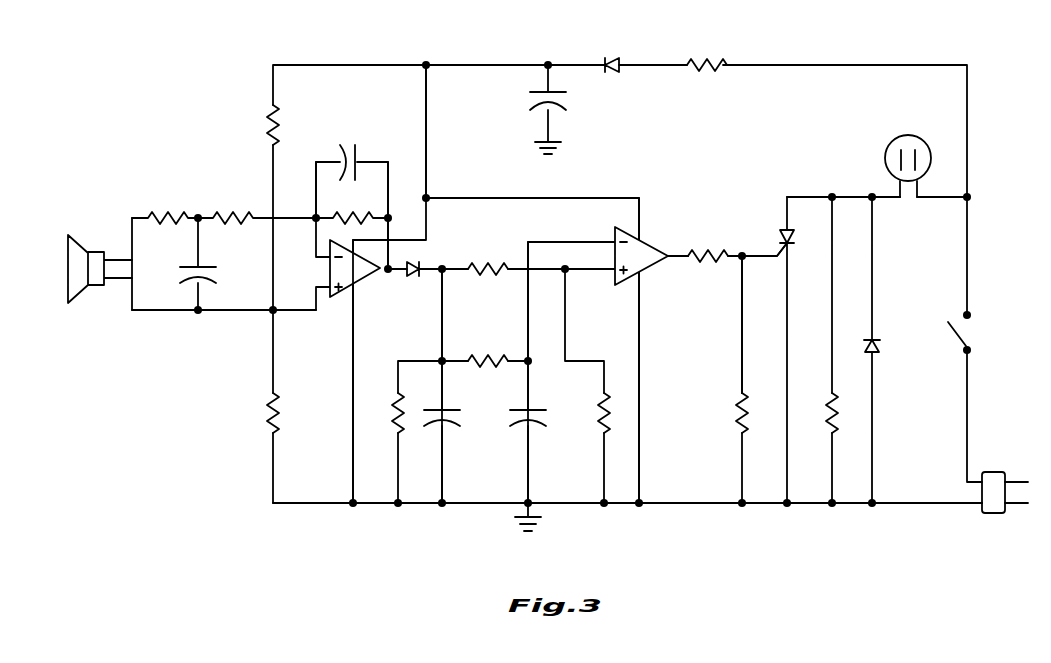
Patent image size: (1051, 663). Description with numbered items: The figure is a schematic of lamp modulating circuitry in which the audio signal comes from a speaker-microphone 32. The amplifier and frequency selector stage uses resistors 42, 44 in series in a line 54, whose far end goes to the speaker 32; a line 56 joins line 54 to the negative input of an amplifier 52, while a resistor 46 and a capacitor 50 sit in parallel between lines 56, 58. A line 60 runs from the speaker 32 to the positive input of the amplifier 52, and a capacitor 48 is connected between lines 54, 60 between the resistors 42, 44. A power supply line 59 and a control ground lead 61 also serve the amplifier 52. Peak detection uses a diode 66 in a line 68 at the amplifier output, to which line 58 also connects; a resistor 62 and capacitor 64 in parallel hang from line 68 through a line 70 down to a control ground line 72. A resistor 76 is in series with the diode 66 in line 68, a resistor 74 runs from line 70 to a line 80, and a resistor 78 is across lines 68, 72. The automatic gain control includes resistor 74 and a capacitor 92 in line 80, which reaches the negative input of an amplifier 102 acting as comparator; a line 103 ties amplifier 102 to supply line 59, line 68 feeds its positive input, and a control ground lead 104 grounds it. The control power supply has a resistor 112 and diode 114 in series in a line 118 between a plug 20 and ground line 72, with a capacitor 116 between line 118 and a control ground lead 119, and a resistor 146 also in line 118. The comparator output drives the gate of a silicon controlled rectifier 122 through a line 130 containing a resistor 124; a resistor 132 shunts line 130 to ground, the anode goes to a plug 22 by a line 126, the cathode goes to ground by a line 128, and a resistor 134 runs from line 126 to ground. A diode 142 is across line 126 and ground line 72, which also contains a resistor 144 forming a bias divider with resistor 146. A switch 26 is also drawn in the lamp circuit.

The plug 20 is at (992, 515).
The plug 22 is at (899, 136).
The switch 26 is at (949, 330).
The speaker-microphone 32 is at (80, 235).
The resistor 42 is at (165, 214).
The resistor 44 is at (228, 214).
The resistor 46 is at (352, 203).
The capacitor 48 is at (180, 276).
The capacitor 50 is at (358, 150).
The amplifier 52 is at (369, 282).
The line 54 is at (258, 222).
The line 56 is at (316, 181).
The line 58 is at (389, 185).
The power supply line 59 is at (428, 113).
The line 60 is at (162, 312).
The control ground lead 61 is at (352, 345).
The resistor 62 is at (395, 428).
The capacitor 64 is at (450, 426).
The diode 66 is at (423, 264).
The line 68 is at (426, 272).
The line 70 is at (440, 318).
The control ground line 72 is at (418, 506).
The resistor 74 is at (488, 366).
The resistor 76 is at (483, 265).
The resistor 78 is at (600, 425).
The line 80 is at (528, 318).
The capacitor 92 is at (540, 410).
The amplifier 102 is at (634, 285).
The line 103 is at (522, 196).
The control ground lead 104 is at (645, 285).
The resistor 112 is at (716, 60).
The diode 114 is at (616, 58).
The capacitor 116 is at (568, 96).
The line 118 is at (483, 64).
The control ground lead 119 is at (552, 118).
The silicon controlled rectifier 122 is at (783, 226).
The resistor 124 is at (701, 254).
The line 126 is at (848, 195).
The line 128 is at (786, 337).
The line 130 is at (765, 254).
The resistor 132 is at (736, 415).
The resistor 134 is at (828, 425).
The diode 142 is at (878, 350).
The resistor 144 is at (268, 415).
The resistor 146 is at (278, 113).